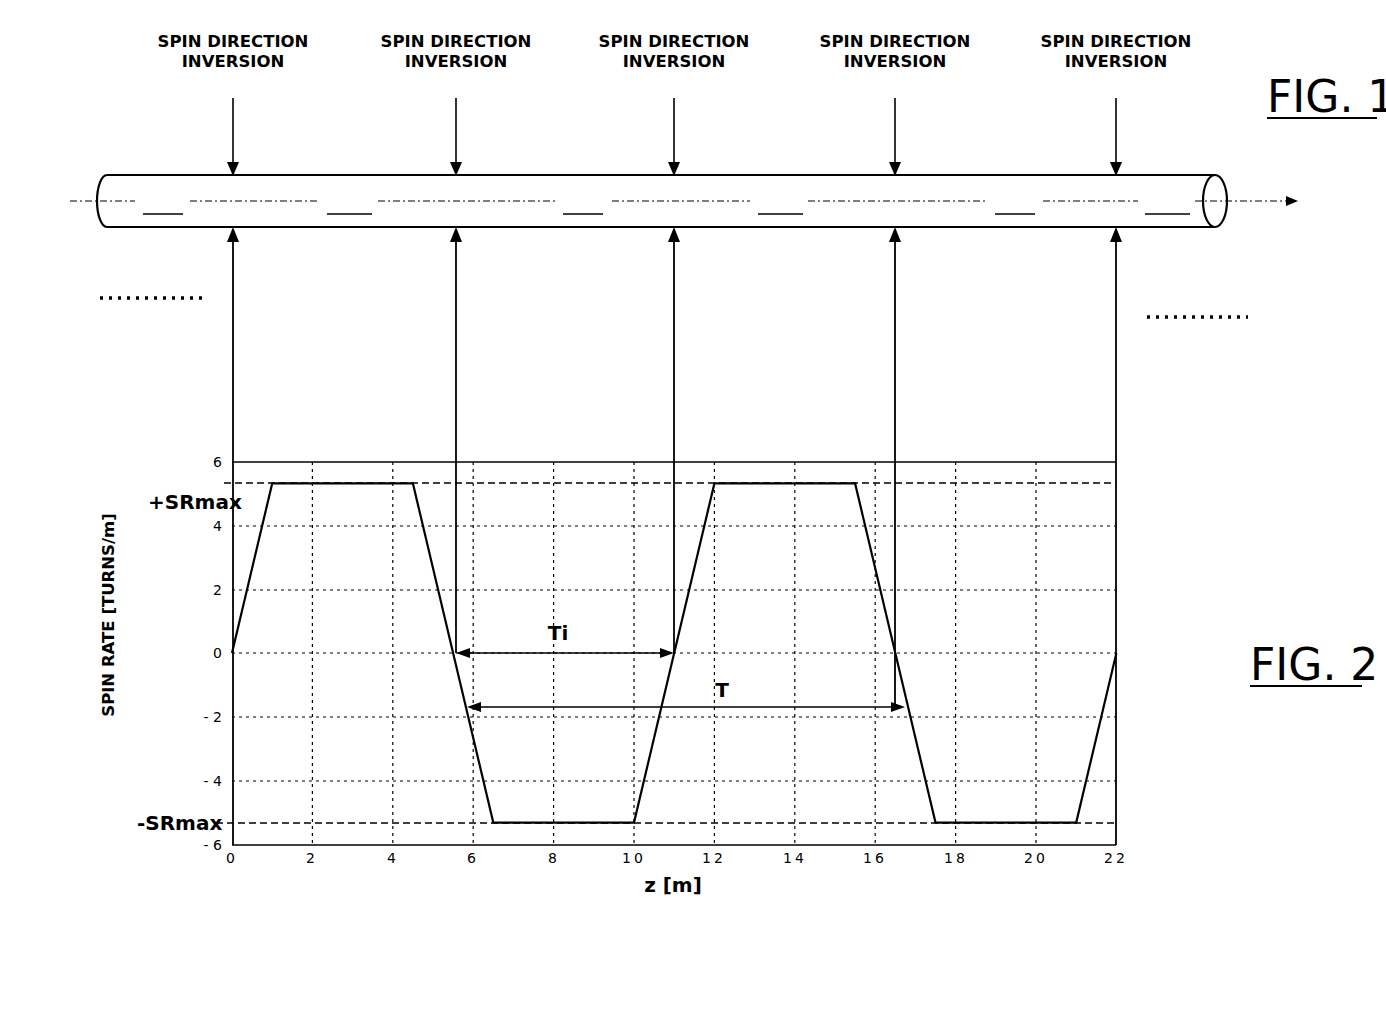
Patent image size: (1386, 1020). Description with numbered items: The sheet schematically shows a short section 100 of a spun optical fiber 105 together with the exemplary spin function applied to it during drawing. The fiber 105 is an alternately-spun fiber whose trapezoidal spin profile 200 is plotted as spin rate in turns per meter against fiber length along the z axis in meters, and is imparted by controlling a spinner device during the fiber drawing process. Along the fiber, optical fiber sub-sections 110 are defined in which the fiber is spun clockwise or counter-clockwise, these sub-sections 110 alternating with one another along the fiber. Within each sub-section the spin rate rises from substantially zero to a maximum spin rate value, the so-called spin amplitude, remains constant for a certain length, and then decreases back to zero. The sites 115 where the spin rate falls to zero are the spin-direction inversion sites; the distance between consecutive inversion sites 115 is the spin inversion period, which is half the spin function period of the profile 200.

In FIG. 1, the short section of spun optical fiber 100 is at (132, 142).
In FIG. 1, the spun optical fiber 105 is at (1206, 229).
In FIG. 1, the optical fiber sub-sections 110 is at (674, 267).
In FIG. 1, the spin-direction inversion sites 115 is at (243, 172).
In FIG. 2, the trapezoidal spin profile 200 is at (655, 733).